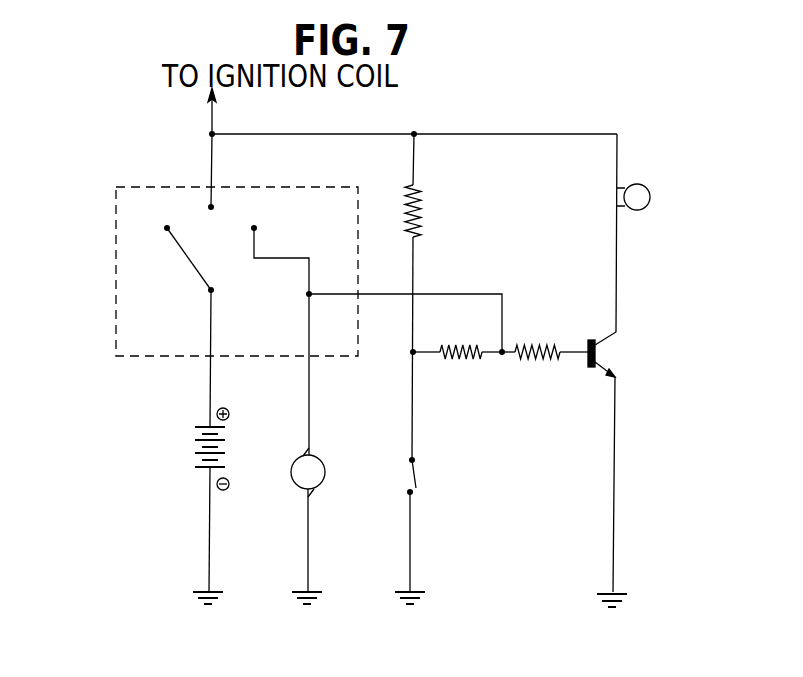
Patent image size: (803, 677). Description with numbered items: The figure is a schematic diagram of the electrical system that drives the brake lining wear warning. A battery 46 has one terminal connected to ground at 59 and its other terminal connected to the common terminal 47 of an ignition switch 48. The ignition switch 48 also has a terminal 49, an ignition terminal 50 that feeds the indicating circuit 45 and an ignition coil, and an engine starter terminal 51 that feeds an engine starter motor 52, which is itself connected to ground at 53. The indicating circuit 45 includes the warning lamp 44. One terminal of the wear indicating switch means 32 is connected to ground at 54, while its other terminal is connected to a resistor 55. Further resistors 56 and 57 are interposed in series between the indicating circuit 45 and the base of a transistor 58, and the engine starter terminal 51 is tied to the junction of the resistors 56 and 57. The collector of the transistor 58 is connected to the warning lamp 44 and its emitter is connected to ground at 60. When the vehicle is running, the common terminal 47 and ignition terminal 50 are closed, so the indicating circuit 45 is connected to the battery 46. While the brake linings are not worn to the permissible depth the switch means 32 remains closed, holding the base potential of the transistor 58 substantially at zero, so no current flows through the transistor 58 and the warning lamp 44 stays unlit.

The wear indicating switch means 32 is at (420, 472).
The warning lamp 44 is at (650, 195).
The indicating circuit 45 is at (490, 134).
The battery 46 is at (192, 450).
The common terminal 47 is at (211, 290).
The ignition switch 48 is at (116, 283).
The terminal 49 is at (167, 228).
The ignition terminal 50 is at (211, 207).
The engine starter terminal 51 is at (254, 228).
The engine starter motor 52 is at (326, 472).
The ground 53 is at (308, 609).
The ground 54 is at (410, 609).
The resistor 55 is at (424, 214).
The resistor 56 is at (461, 360).
The resistor 57 is at (538, 360).
The transistor 58 is at (602, 355).
The ground 59 is at (208, 609).
The ground 60 is at (612, 612).